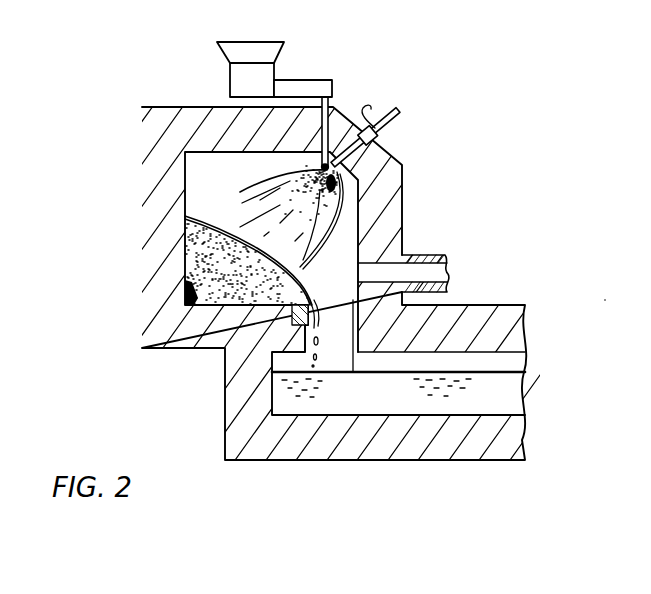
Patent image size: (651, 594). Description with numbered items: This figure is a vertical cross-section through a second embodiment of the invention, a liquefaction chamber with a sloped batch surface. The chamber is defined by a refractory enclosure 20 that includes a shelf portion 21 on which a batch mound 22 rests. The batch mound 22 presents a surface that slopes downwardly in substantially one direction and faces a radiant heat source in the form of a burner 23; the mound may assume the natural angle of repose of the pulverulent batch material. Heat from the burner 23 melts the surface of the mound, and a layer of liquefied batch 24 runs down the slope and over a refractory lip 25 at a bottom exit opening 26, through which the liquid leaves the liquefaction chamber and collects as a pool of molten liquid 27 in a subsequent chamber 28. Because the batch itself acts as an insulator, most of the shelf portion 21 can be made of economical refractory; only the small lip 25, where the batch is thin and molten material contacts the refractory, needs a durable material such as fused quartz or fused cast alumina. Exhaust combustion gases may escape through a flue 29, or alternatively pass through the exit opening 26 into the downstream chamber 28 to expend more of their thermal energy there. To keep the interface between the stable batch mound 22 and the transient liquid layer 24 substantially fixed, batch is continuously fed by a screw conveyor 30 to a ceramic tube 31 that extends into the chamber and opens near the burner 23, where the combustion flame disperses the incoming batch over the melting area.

The refractory enclosure 20 is at (142, 192).
The shelf portion 21 is at (240, 303).
The batch mound 22 is at (195, 215).
The burner 23 is at (378, 138).
The layer of liquefied batch 24 is at (311, 289).
The refractory lip 25 is at (292, 312).
The exit opening 26 is at (338, 311).
The pool of molten liquid 27 is at (349, 370).
The subsequent chamber 28 is at (459, 362).
The flue 29 is at (412, 253).
The screw conveyor 30 is at (230, 71).
The ceramic tube 31 is at (333, 104).